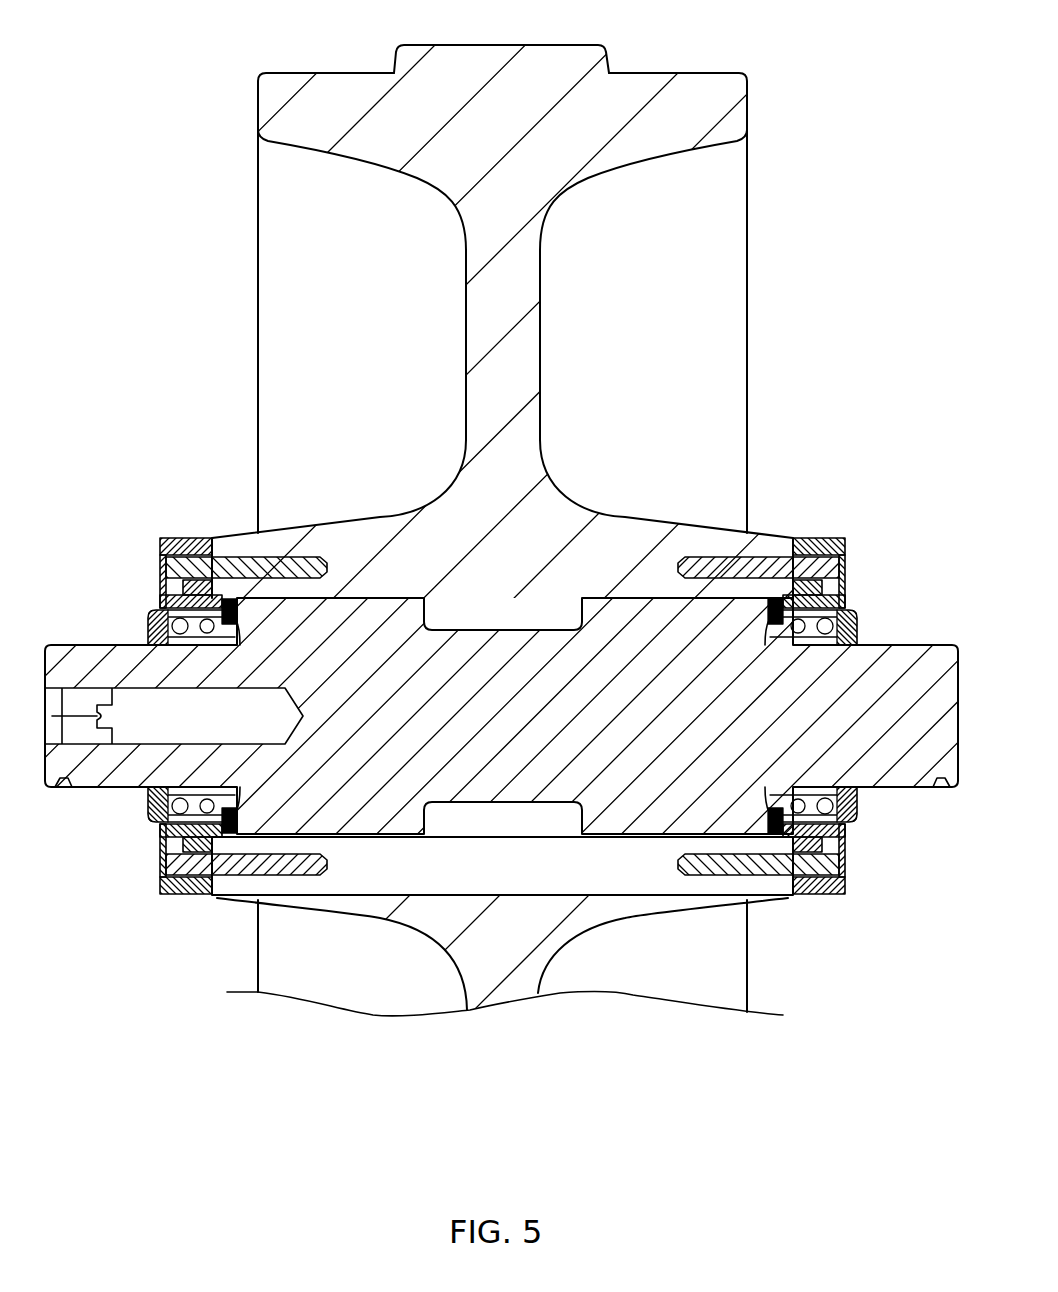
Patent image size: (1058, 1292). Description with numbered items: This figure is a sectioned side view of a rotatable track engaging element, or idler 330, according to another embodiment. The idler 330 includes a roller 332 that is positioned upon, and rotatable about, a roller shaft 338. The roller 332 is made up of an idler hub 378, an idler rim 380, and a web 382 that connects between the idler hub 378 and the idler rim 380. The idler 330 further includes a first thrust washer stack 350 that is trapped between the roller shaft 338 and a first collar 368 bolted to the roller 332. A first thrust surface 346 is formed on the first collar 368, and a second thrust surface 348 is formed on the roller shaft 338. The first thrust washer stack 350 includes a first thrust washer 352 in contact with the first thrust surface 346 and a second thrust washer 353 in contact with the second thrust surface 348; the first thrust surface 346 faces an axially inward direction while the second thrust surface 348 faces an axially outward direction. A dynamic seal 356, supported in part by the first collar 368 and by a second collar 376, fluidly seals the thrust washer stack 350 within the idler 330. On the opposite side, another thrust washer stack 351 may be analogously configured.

The idler 330 is at (862, 79).
The roller 332 is at (750, 125).
The roller shaft 338 is at (922, 645).
The first thrust surface 346 is at (163, 580).
The second thrust surface 348 is at (266, 568).
The first thrust washer stack 350 is at (248, 620).
The thrust washer stack 351 is at (752, 621).
The first thrust washer 352 is at (206, 895).
The second thrust washer 353 is at (240, 815).
The dynamic seal 356 is at (193, 655).
The first collar 368 is at (182, 538).
The second collar 376 is at (148, 630).
The idler hub 378 is at (764, 545).
The idler rim 380 is at (660, 72).
The web 382 is at (530, 284).